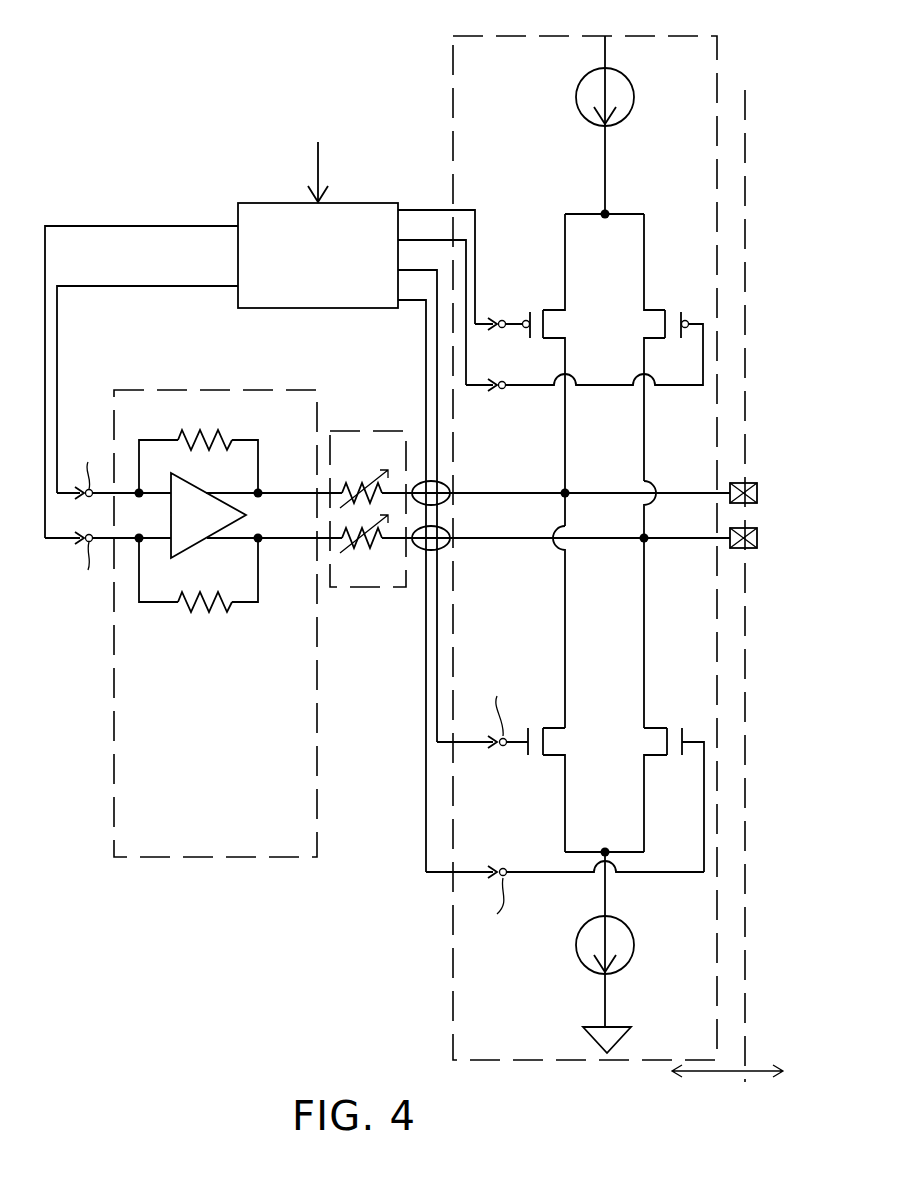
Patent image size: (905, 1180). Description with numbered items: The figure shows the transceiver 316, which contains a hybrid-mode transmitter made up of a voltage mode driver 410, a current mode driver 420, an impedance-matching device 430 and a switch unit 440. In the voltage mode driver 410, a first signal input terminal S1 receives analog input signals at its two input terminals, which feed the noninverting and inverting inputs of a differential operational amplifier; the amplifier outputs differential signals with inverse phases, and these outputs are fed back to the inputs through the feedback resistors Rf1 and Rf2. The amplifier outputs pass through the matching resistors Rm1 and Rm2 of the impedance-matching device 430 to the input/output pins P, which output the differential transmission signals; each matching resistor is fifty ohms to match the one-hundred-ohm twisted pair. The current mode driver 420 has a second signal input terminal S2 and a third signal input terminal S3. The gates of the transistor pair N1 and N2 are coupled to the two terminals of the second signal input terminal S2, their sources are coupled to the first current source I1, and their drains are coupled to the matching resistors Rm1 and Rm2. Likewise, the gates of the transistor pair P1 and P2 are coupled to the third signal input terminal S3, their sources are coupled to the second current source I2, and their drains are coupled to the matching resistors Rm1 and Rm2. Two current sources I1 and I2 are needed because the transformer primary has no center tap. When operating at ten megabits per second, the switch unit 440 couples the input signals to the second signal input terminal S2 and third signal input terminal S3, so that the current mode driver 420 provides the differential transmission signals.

The first transceiver 316 is at (109, 46).
The voltage mode driver 410 is at (217, 390).
The current mode driver 420 is at (613, 36).
The impedance-matching device 430 is at (343, 431).
The switch unit 440 is at (362, 203).
The first signal input terminal S1 is at (75, 515).
The second signal input terminal S2 is at (565, 801).
The third signal input terminal S3 is at (584, 356).
The feedback resistor Rf1 is at (198, 445).
The feedback resistor Rf2 is at (198, 593).
The matching resistor Rm1 is at (370, 475).
The matching resistor Rm2 is at (370, 548).
The first current source I1 is at (620, 939).
The second current source I2 is at (618, 125).
The transistor P1 is at (669, 347).
The transistor P2 is at (544, 370).
The transistor N1 is at (674, 800).
The transistor N2 is at (546, 790).
The input/output pin P is at (757, 482).